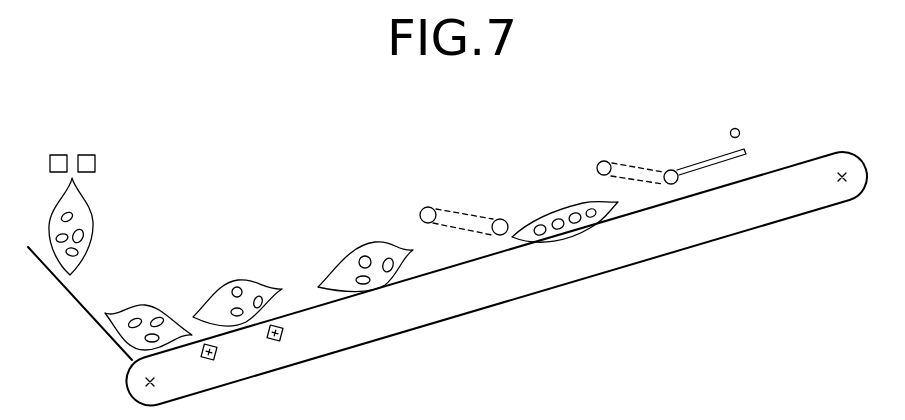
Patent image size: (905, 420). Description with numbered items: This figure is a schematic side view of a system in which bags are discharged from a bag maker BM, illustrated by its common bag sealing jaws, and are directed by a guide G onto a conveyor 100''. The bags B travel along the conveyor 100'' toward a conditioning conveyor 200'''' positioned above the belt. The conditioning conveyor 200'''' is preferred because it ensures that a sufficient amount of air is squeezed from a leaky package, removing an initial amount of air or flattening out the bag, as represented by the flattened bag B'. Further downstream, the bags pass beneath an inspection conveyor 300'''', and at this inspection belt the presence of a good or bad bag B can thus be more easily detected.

The conveyor 100'' is at (496, 279).
The guide G is at (97, 327).
The bag maker BM is at (106, 162).
The bag B is at (231, 264).
The flattened bag B' is at (565, 169).
The conditioning conveyor 200'''' is at (467, 178).
The inspection conveyor 300'''' is at (671, 114).